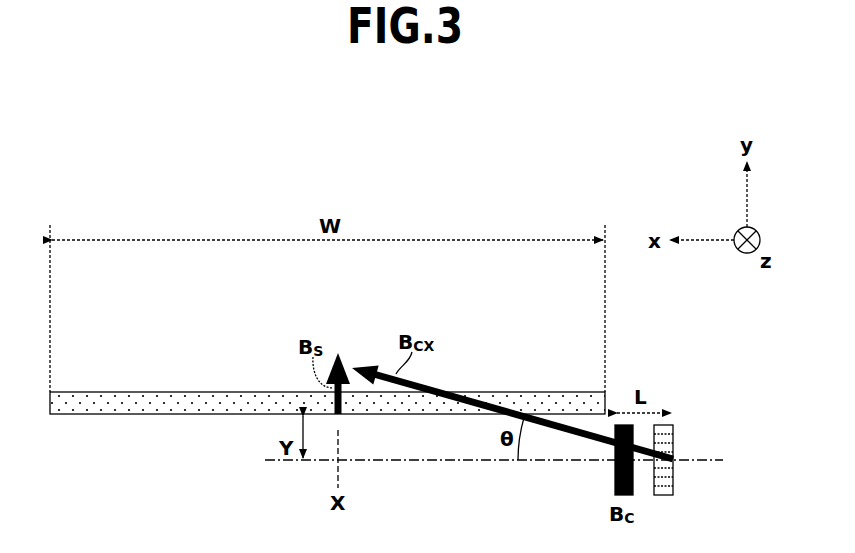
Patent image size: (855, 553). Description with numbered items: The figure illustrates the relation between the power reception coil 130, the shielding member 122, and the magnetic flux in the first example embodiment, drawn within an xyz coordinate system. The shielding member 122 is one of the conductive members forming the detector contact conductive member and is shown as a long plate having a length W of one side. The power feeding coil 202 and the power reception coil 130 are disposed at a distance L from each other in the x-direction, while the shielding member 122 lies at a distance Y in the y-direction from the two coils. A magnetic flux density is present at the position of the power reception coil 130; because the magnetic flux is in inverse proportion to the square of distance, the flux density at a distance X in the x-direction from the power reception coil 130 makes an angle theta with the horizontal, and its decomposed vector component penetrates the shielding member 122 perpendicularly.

The shielding member 122 is at (148, 415).
The power reception coil 130 is at (614, 485).
The power feeding coil 202 is at (675, 430).